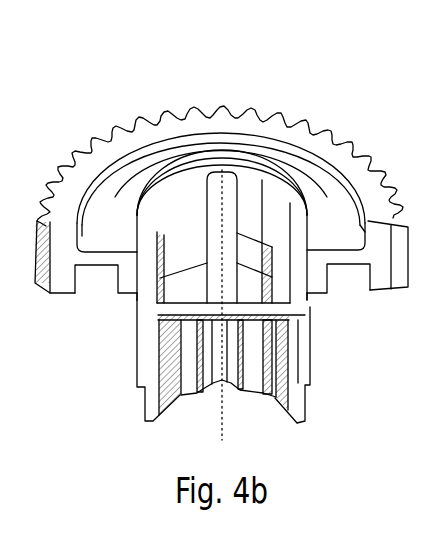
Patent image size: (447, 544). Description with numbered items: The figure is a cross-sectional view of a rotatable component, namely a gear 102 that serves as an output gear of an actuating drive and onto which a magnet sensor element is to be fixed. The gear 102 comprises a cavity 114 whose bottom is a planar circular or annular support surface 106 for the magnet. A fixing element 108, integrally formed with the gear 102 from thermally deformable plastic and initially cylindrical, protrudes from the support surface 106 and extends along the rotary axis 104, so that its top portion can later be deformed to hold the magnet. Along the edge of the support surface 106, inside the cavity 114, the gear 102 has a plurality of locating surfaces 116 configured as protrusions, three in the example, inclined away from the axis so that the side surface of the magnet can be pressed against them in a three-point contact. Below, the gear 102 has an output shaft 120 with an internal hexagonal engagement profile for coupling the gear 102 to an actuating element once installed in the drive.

The gear 102 is at (221, 226).
The rotary axis 104 is at (221, 167).
The support surface 106 is at (199, 361).
The fixing element 108 is at (222, 258).
The cavity 114 is at (221, 164).
The locating surfaces 116 is at (228, 299).
The output shaft 120 is at (228, 409).